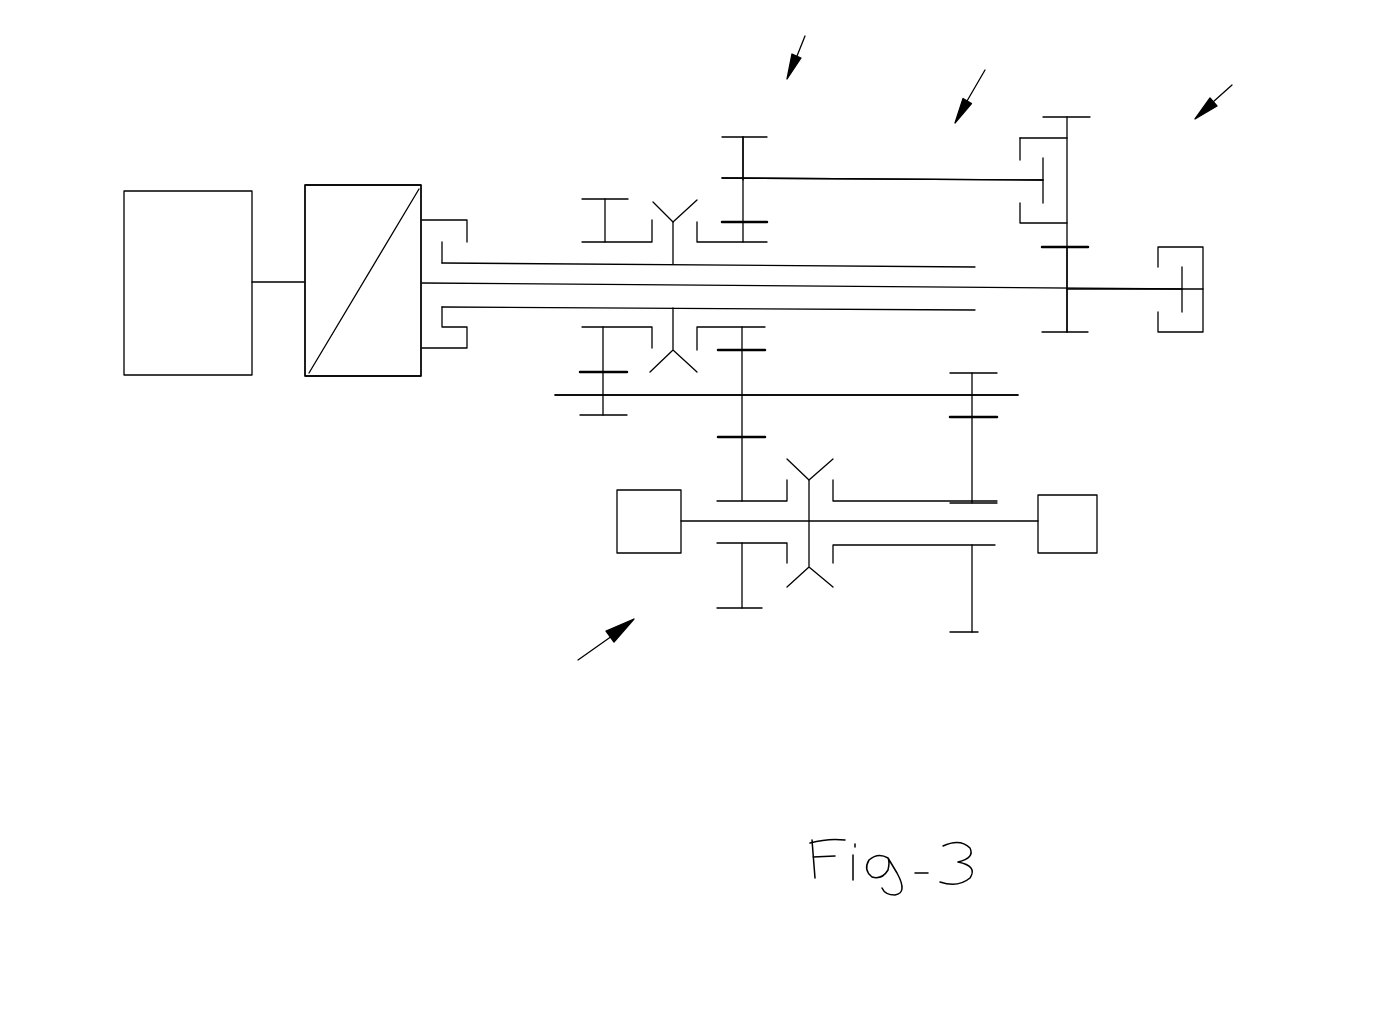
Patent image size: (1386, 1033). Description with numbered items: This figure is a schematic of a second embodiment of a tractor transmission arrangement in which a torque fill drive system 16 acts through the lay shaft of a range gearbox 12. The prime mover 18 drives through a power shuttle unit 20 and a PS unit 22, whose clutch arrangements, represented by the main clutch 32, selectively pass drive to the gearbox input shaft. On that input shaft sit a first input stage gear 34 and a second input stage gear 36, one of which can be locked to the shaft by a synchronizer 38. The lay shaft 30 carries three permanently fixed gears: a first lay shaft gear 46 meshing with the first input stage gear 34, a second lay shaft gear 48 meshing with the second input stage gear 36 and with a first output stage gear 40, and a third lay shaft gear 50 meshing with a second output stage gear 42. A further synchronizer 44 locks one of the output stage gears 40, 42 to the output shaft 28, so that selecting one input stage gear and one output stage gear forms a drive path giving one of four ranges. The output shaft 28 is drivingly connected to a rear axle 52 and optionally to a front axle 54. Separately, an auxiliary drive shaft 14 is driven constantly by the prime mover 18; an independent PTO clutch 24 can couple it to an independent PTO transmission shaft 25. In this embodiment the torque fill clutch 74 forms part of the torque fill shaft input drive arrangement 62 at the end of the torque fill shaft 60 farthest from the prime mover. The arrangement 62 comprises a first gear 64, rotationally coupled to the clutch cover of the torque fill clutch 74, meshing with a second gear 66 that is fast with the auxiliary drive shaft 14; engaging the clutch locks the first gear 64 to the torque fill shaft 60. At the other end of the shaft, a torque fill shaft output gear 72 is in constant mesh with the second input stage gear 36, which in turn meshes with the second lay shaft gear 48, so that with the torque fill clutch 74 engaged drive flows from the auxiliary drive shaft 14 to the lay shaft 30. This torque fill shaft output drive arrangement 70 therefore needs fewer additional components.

The range gearbox 12 is at (594, 662).
The auxiliary drive shaft 14 is at (1195, 205).
The torque fill drive system 16 is at (1004, 81).
The prime mover 18 is at (188, 283).
The power shuttle unit 20 is at (363, 280).
The PS unit 22 is at (363, 280).
The independent PTO clutch 24 is at (1275, 276).
The independent PTO transmission shaft 25 is at (1240, 326).
The output shaft 28 is at (1040, 447).
The lay shaft 30 is at (922, 342).
The main clutch 32 is at (463, 128).
The first input stage gear 34 is at (610, 133).
The second input stage gear 36 is at (815, 230).
The synchronizer 38 is at (691, 85).
The first output stage gear 40 is at (710, 666).
The second output stage gear 42 is at (1016, 672).
The further synchronizer 44 is at (822, 636).
The first lay shaft gear 46 is at (495, 453).
The second lay shaft gear 48 is at (812, 372).
The third lay shaft gear 50 is at (1030, 378).
The rear axle 52 is at (1162, 538).
The front axle 54 is at (594, 572).
The torque fill shaft 60 is at (902, 148).
The torque fill shaft input drive arrangement 62 is at (1248, 89).
The first gear 64 is at (1104, 140).
The second gear 66 is at (1125, 346).
The torque fill shaft output drive arrangement 70 is at (830, 41).
The torque fill shaft output gear 72 is at (820, 90).
The torque fill clutch 74 is at (1090, 82).